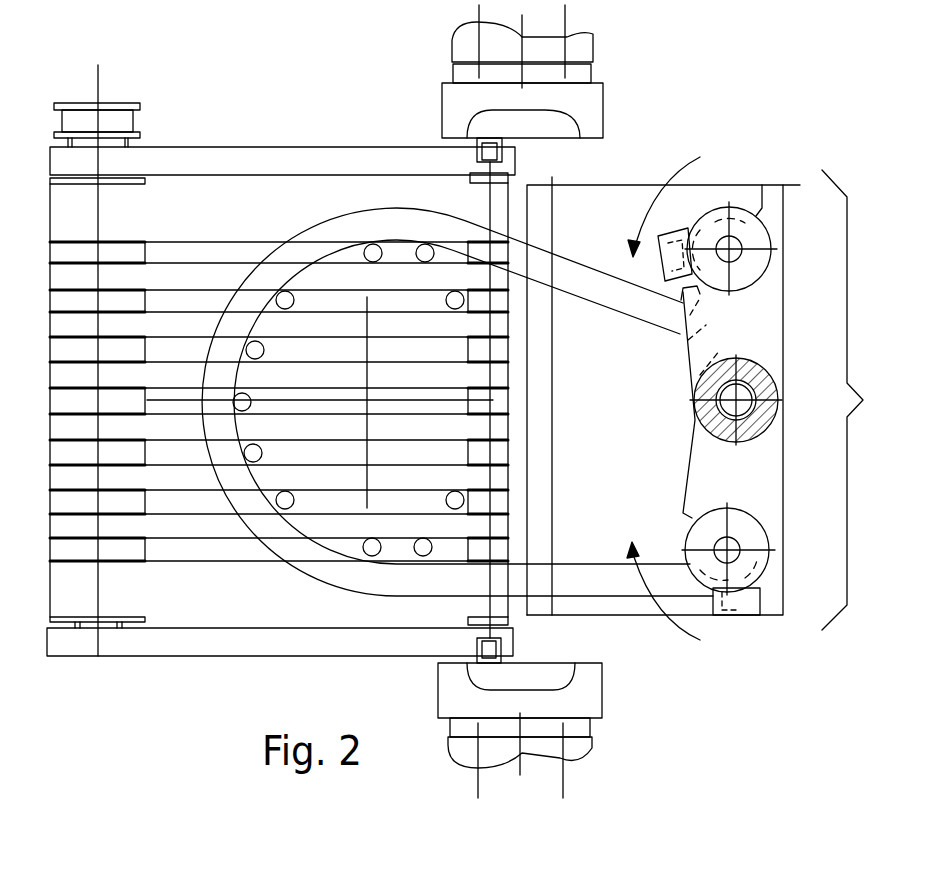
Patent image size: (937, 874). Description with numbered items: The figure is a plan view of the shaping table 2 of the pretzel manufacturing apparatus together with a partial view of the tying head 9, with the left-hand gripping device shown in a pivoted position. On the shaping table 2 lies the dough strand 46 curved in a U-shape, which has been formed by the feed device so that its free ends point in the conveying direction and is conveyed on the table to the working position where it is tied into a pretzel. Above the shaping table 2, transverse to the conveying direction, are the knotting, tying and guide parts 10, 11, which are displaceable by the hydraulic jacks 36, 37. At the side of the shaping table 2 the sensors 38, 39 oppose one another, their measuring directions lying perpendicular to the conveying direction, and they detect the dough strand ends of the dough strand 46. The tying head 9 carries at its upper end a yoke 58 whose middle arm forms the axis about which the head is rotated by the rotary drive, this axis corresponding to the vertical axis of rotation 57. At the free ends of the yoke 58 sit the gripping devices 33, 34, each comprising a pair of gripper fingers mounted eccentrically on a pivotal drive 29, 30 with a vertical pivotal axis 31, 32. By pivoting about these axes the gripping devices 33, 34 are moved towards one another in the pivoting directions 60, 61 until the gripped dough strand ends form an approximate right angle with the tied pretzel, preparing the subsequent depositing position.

The shaping table 2 is at (213, 137).
The dough strand curved in a U-shape 46 is at (405, 223).
The knotting, tying and guide part 10 is at (460, 100).
The knotting, tying and guide part 11 is at (587, 692).
The hydraulic jack 36 is at (583, 45).
The hydraulic jack 37 is at (578, 752).
The sensor 38 is at (478, 143).
The sensor 39 is at (482, 655).
The pivotal drive 29 is at (743, 217).
The pivotal drive 30 is at (745, 528).
The vertical pivotal axis 31 is at (742, 246).
The vertical pivotal axis 32 is at (741, 547).
The gripping device 33 is at (681, 237).
The gripping device 34 is at (750, 600).
The vertical axis of rotation 57 is at (757, 389).
The yoke 58 is at (745, 328).
The tying head 9 is at (853, 400).
The pivoting direction 60 is at (653, 207).
The pivoting direction 61 is at (663, 593).